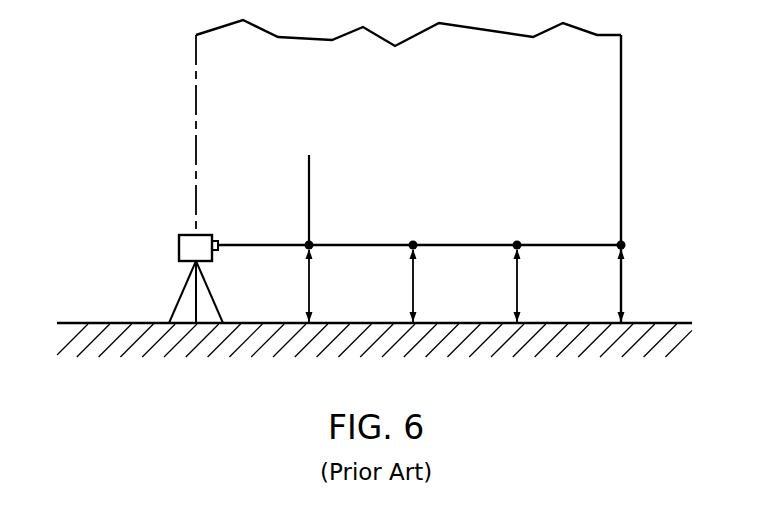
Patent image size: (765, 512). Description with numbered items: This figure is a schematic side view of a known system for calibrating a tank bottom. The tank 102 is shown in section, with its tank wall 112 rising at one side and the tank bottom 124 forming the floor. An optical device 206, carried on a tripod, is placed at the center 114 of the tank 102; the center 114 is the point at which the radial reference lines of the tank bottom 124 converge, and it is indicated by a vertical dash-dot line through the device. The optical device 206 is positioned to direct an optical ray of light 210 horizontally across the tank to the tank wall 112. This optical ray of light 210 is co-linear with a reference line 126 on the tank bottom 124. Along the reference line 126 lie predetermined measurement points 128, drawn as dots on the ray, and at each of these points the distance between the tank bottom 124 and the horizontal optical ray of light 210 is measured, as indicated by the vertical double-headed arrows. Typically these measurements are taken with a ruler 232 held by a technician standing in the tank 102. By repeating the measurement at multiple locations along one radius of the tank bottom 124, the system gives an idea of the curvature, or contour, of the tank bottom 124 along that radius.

The tank 102 is at (597, 83).
The tank wall 112 is at (622, 175).
The center 114 is at (195, 114).
The tank bottom 124 is at (272, 323).
The reference line 126 is at (584, 245).
The measurement points 128 is at (310, 243).
The optical device 206 is at (187, 234).
The optical ray of light 210 is at (453, 245).
The ruler 232 is at (309, 186).